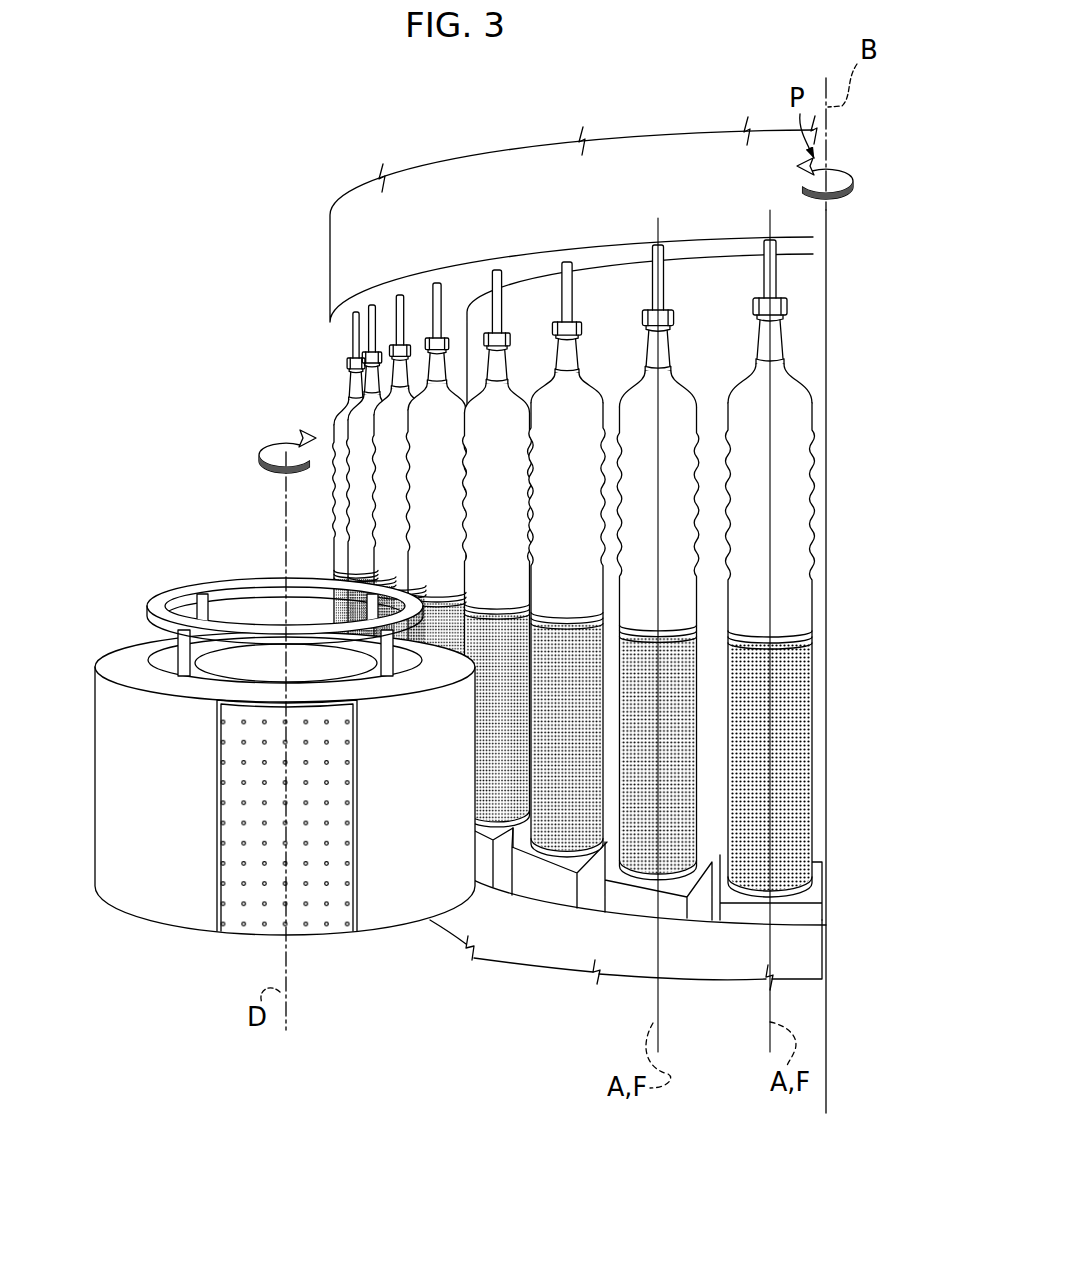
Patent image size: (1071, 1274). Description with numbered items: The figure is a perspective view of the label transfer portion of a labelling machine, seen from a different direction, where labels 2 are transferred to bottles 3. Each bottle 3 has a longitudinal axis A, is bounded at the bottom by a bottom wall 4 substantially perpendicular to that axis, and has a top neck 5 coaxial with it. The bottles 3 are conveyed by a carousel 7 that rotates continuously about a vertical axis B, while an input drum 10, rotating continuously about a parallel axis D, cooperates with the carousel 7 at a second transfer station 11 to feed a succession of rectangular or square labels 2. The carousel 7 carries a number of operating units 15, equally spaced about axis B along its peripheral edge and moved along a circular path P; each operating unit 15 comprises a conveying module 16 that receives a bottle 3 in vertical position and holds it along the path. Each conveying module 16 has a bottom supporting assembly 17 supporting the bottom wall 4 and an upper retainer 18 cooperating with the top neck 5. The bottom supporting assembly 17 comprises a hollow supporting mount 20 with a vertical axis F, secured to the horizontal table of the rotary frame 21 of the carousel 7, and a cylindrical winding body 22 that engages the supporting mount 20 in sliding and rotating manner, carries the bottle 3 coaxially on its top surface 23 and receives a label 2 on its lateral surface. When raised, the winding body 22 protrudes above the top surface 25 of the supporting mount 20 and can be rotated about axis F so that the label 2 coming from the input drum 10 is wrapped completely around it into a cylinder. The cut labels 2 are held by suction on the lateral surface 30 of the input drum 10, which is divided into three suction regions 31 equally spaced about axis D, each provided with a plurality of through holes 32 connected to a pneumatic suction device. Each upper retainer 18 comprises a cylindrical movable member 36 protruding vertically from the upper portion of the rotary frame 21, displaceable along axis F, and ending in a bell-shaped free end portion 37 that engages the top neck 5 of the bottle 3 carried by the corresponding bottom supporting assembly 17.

The label 2 is at (607, 734).
The bottle 3 is at (674, 422).
The bottom wall 4 is at (784, 650).
The top neck 5 is at (792, 357).
The carousel 7 is at (348, 238).
The input drum 10 is at (266, 817).
The second transfer station 11 is at (490, 740).
The operating unit 15 is at (522, 907).
The conveying module 16 is at (557, 897).
The bottom supporting assembly 17 is at (830, 843).
The upper retainer 18 is at (683, 273).
The hollow supporting mount 20 is at (655, 952).
The rotary frame 21 is at (730, 950).
The cylindrical winding body 22 is at (805, 757).
The top surface 23 is at (804, 628).
The top surface 25 is at (817, 889).
The lateral surface 30 is at (148, 738).
The suction region 31 is at (256, 918).
The through hole 32 is at (294, 856).
The cylindrical movable member 36 is at (650, 285).
The bell-shaped free end portion 37 is at (612, 352).